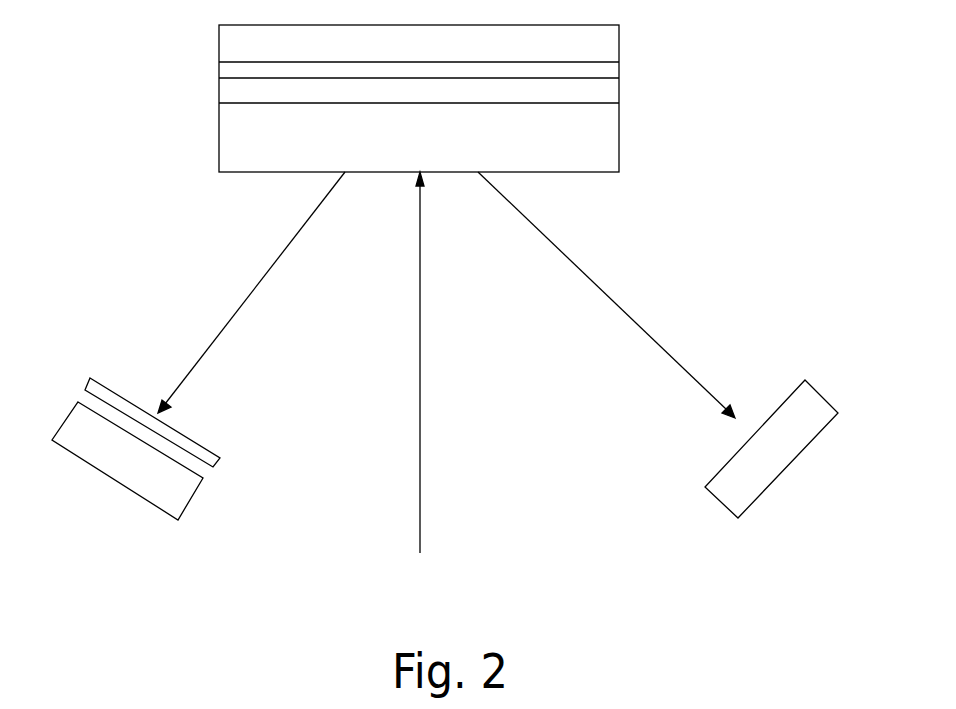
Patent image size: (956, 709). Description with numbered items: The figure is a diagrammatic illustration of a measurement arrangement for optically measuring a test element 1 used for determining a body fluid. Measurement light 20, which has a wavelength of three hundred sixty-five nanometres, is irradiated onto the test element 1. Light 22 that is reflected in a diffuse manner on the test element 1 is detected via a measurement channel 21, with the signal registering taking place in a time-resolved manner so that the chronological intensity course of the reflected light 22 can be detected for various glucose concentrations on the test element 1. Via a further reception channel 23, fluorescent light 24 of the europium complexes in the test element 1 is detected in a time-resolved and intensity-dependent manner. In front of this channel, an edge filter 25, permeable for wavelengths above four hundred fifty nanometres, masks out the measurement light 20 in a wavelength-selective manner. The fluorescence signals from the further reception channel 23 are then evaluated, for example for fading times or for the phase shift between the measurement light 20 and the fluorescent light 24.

The test element 1 is at (676, 22).
The measurement light 20 is at (421, 408).
The measurement channel 21 is at (783, 450).
The reflected light 22 is at (620, 300).
The further reception channel 23 is at (183, 490).
The fluorescent light 24 is at (255, 295).
The edge filter 25 is at (213, 463).